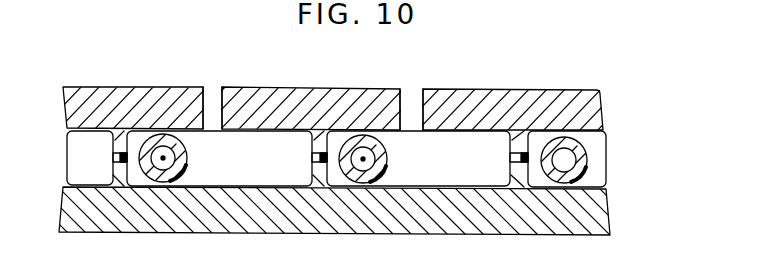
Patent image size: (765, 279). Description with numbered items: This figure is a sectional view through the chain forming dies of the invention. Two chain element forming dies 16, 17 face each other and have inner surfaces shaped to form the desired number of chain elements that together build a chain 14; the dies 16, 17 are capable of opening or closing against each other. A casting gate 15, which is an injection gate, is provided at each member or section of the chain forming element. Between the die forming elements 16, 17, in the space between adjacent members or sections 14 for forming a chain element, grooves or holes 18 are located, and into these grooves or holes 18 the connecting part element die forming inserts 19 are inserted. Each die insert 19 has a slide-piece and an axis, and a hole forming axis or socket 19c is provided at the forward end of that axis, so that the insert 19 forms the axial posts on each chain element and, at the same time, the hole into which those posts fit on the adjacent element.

The chain 14 is at (248, 180).
The casting gate 15 is at (214, 100).
The chain element forming die 16 is at (562, 100).
The chain element forming die 17 is at (558, 212).
The groove or hole 18 is at (152, 138).
The die insert 19 is at (168, 146).
The hole forming axis 19c is at (163, 160).